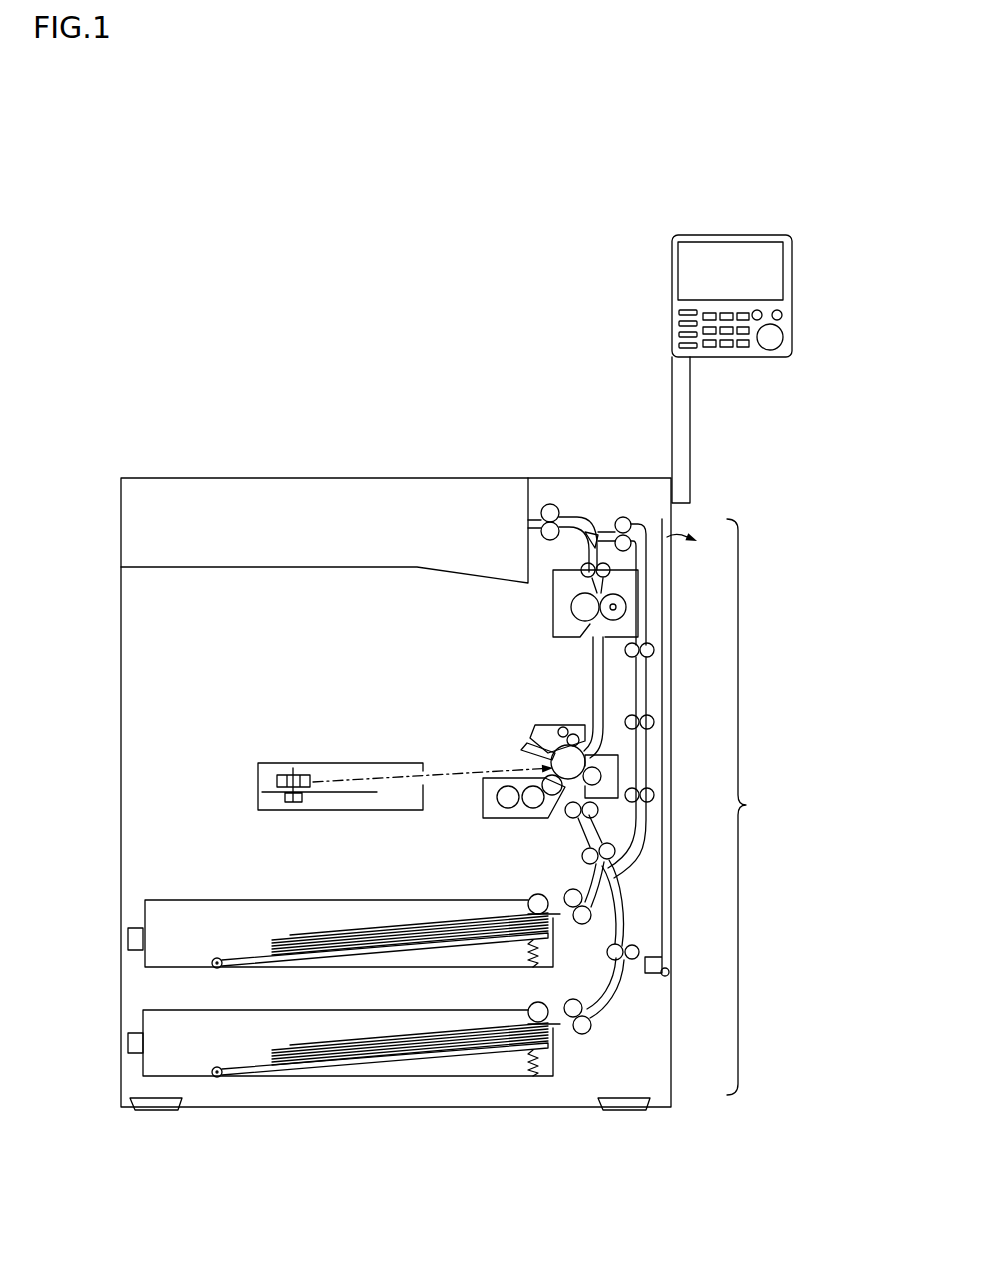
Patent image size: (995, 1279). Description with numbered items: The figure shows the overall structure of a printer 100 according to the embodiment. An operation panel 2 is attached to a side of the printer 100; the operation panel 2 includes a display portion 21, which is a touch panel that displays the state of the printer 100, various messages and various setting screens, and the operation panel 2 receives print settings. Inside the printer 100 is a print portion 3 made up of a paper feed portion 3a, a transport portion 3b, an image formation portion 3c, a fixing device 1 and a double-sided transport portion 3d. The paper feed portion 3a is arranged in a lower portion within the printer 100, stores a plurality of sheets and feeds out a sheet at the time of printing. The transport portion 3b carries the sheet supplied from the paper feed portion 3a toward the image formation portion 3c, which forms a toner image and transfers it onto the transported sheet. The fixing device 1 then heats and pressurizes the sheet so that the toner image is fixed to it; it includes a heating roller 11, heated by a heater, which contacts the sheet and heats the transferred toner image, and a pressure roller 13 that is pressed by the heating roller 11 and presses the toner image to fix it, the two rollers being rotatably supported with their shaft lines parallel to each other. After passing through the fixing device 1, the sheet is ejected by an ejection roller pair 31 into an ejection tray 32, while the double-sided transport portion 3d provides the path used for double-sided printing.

The printer 100 is at (114, 468).
The operation panel 2 is at (716, 344).
The display portion 21 is at (718, 262).
The ejection tray 32 is at (416, 566).
The ejection roller pair 31 is at (550, 504).
The print portion 3 is at (406, 806).
The fixing device 1 is at (605, 585).
The heating roller 11 is at (571, 607).
The pressure roller 13 is at (617, 607).
The image formation portion 3c is at (494, 703).
The double-sided transport portion 3d is at (656, 680).
The transport portion 3b is at (641, 910).
The paper feed portion 3a is at (139, 1000).